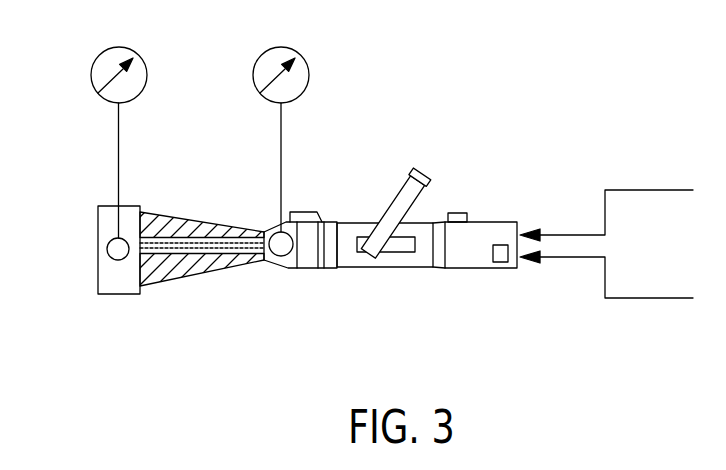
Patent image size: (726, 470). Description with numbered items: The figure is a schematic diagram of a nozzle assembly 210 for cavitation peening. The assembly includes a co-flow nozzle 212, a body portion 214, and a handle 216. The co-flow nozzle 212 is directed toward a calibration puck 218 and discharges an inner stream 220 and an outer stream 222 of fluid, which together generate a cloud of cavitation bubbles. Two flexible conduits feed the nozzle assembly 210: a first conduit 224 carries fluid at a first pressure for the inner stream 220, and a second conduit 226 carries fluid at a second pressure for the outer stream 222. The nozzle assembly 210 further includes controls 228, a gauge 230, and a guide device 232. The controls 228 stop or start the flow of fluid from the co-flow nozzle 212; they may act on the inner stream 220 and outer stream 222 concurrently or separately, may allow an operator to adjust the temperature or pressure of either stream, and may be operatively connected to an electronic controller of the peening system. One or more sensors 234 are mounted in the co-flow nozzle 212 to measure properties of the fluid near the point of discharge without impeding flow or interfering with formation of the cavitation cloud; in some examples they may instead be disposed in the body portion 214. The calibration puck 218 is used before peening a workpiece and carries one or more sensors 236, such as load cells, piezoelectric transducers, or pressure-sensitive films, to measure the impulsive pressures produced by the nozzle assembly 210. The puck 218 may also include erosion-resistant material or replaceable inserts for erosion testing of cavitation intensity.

The nozzle assembly 210 is at (363, 204).
The co-flow nozzle 212 is at (275, 274).
The body portion 214 is at (391, 274).
The handle 216 is at (398, 189).
The calibration puck 218 is at (86, 250).
The inner stream 220 is at (170, 231).
The outer stream 222 is at (170, 271).
The first conduit 224 is at (606, 185).
The second conduit 226 is at (606, 307).
The controls 228 is at (491, 286).
The gauge 230 is at (466, 188).
The guide device 232 is at (313, 211).
The sensors 234 is at (278, 139).
The sensors 236 is at (94, 153).